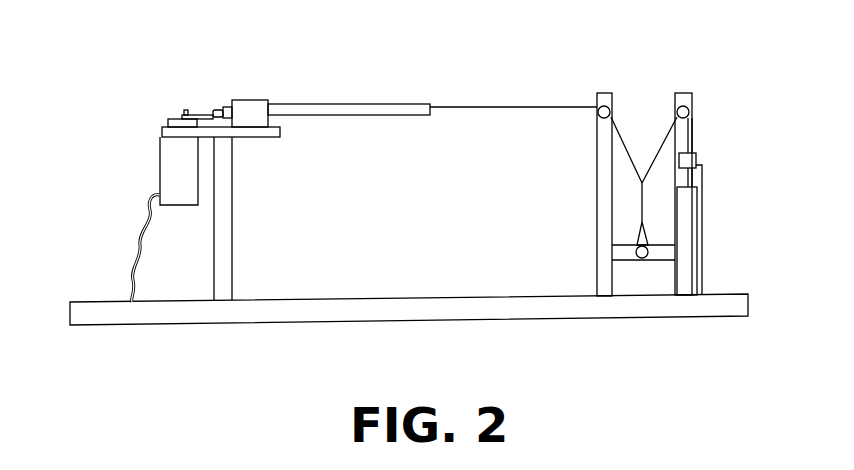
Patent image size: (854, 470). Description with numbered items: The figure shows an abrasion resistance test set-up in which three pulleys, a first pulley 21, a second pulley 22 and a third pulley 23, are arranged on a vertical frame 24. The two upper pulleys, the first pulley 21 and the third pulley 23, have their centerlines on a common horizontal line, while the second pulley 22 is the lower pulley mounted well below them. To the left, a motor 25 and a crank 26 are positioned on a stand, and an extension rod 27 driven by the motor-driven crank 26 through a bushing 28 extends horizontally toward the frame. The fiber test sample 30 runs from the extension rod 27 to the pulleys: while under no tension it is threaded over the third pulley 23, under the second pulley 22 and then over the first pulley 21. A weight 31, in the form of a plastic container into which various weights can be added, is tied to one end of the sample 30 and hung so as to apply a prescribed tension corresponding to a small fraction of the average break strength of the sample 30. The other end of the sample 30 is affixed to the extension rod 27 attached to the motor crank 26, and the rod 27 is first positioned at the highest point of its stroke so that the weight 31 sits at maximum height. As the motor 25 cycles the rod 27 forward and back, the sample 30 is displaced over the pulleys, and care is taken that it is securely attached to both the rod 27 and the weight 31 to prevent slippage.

The first pulley 21 is at (613, 107).
The second pulley 22 is at (642, 258).
The third pulley 23 is at (690, 110).
The vertical frame 24 is at (603, 92).
The motor 25 is at (170, 168).
The crank 26 is at (203, 108).
The extension rod 27 is at (318, 110).
The bushing 28 is at (250, 108).
The test sample 30 is at (501, 103).
The weight 31 is at (698, 157).